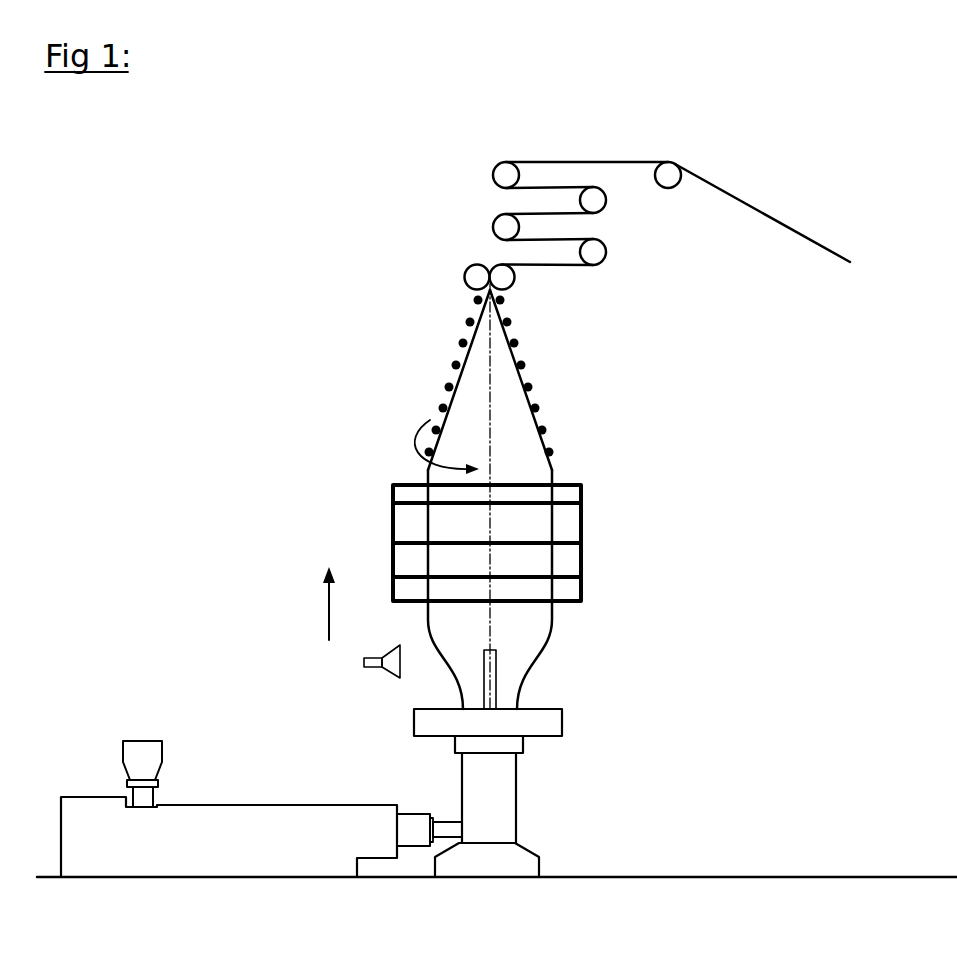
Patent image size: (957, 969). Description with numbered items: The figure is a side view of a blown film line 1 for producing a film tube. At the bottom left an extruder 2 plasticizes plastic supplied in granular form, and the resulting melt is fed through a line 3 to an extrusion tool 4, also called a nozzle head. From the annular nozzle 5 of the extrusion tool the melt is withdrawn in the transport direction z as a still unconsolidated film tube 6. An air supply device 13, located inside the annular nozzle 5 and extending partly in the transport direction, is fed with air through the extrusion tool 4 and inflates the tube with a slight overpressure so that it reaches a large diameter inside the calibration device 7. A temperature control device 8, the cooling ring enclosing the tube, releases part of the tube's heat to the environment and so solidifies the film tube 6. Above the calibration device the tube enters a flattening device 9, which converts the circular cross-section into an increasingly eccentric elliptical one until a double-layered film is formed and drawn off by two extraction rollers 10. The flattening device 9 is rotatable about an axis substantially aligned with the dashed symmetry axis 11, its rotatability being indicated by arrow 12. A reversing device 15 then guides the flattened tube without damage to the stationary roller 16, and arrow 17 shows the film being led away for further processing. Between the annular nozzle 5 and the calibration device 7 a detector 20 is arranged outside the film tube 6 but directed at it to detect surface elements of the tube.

The blown film line 1 is at (290, 421).
The extruder 2 is at (227, 837).
The line 3 is at (448, 828).
The extrusion tool 4 is at (500, 823).
The annular nozzle 5 is at (525, 702).
The film tube 6 is at (545, 650).
The calibration device 7 is at (583, 555).
The temperature control device 8 is at (560, 727).
The flattening device 9 is at (545, 371).
The extraction rollers 10 is at (452, 277).
The symmetry axis 11 is at (492, 458).
The arrow 12 is at (417, 443).
The air supply device 13 is at (484, 667).
The reversing device 15 is at (478, 196).
The stationary roller 16 is at (683, 172).
The arrow 17 is at (758, 193).
The detector 20 is at (364, 663).